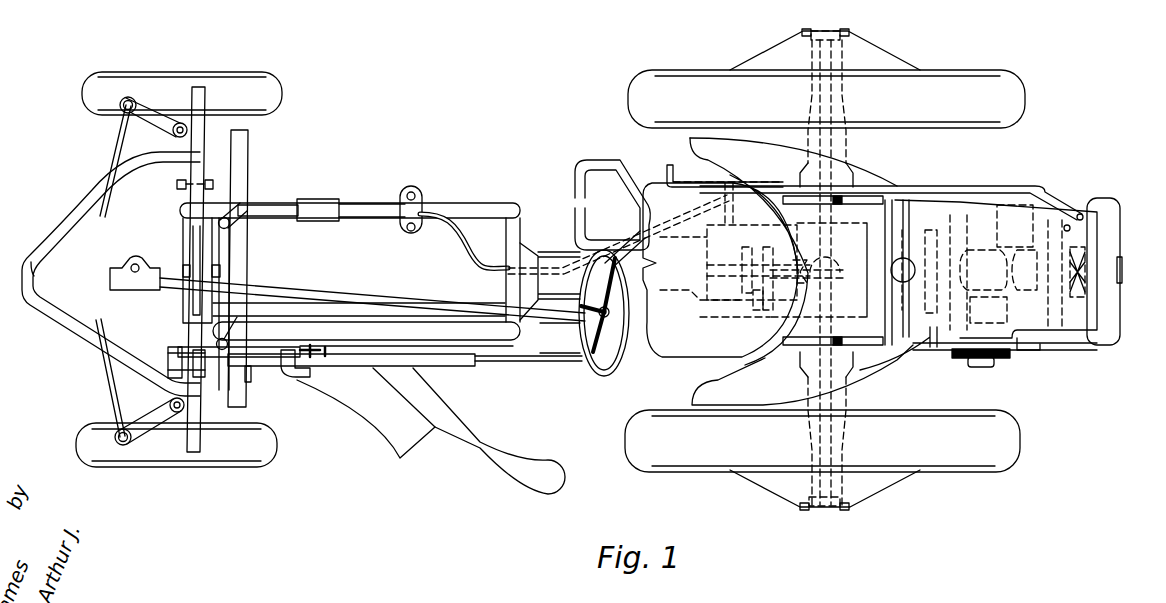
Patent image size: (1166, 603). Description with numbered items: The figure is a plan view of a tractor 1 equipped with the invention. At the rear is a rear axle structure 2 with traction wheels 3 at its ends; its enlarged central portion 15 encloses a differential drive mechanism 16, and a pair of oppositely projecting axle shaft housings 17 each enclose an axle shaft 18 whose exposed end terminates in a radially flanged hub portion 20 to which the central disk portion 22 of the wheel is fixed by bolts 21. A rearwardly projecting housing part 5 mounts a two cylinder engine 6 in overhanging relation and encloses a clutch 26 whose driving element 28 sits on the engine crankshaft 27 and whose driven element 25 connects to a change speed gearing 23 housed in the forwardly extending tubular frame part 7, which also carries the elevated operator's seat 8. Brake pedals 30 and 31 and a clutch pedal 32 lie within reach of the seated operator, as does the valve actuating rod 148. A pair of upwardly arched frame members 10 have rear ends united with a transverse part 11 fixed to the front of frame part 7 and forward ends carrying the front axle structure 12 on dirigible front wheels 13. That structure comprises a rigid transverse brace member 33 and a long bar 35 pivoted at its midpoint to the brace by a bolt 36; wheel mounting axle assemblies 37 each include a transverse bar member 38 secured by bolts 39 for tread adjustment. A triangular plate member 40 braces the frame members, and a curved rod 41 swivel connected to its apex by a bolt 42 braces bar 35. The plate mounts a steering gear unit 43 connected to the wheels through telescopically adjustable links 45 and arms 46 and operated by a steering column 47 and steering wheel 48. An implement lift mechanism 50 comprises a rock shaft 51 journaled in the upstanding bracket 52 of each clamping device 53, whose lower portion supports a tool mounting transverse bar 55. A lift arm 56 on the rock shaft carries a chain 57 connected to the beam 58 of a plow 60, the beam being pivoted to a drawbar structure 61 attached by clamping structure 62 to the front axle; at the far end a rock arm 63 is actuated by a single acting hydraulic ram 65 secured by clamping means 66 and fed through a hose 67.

The tractor 1 is at (690, 262).
The rear axle structure 2 is at (856, 251).
The traction wheels 3 is at (973, 72).
The rearwardly projecting frame or housing part 5 is at (930, 330).
The engine 6 is at (1013, 352).
The forwardly extending frame part 7 is at (553, 258).
The operator's seat or station 8 is at (660, 353).
The upwardly arched frame members 10 is at (498, 198).
The transverse part 11 is at (505, 278).
The front axle structure 12 is at (148, 240).
The dirigible front wheels 13 is at (243, 80).
The enlarged central portion 15 is at (860, 313).
The differential drive mechanism 16 is at (837, 280).
The axle shaft housings 17 is at (847, 146).
The axle shaft 18 is at (830, 113).
The radially flanged hub portion 20 is at (802, 38).
The bolts 21 is at (847, 32).
The central disk portion 22 is at (885, 52).
The change speed gearing 23 is at (743, 257).
The driven element 25 is at (917, 238).
The clutch 26 is at (943, 221).
The engine crankshaft 27 is at (1033, 287).
The driving element 28 is at (950, 242).
The brake pedal 30 is at (575, 213).
The brake pedal 31 is at (575, 179).
The clutch pedal 32 is at (577, 325).
The rigid transverse brace member 33 is at (208, 244).
The bar 35 is at (200, 450).
The bolt 36 is at (217, 270).
The wheel mounting axle assemblies 37 is at (182, 125).
The transverse bar member 38 is at (176, 180).
The bolts 39 is at (208, 178).
The triangular shaped plate member 40 is at (70, 307).
The curved rod 41 is at (78, 207).
The bolt 42 is at (33, 268).
The steering gear unit 43 is at (124, 267).
The telescopically adjustable links 45 is at (115, 157).
The arms 46 is at (160, 127).
The steering column 47 is at (377, 281).
The steering wheel 48 is at (598, 372).
The implement lift mechanism 50 is at (255, 280).
The rock shaft 51 is at (252, 317).
The upstanding bracket 52 is at (260, 334).
The clamping device 53 is at (222, 338).
The transverse bar 55 is at (240, 405).
The lift arm 56 is at (330, 350).
The chain 57 is at (347, 363).
The beam 58 is at (465, 366).
The plow 60 is at (408, 432).
The drawbar structure 61 is at (257, 366).
The clamping structure 62 is at (167, 362).
The rock arm 63 is at (258, 203).
The single acting hydraulic ram 65 is at (377, 204).
The clamping means 66 is at (417, 194).
The hose 67 is at (473, 250).
The valve actuating rod 148 is at (668, 170).